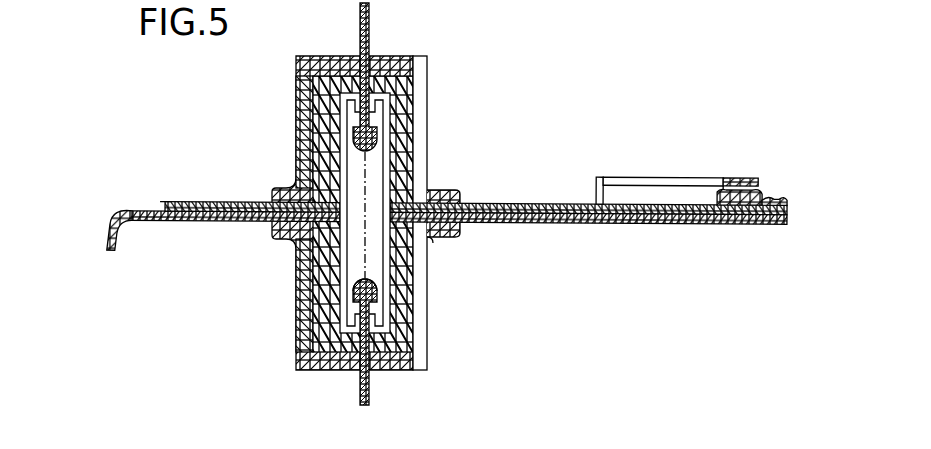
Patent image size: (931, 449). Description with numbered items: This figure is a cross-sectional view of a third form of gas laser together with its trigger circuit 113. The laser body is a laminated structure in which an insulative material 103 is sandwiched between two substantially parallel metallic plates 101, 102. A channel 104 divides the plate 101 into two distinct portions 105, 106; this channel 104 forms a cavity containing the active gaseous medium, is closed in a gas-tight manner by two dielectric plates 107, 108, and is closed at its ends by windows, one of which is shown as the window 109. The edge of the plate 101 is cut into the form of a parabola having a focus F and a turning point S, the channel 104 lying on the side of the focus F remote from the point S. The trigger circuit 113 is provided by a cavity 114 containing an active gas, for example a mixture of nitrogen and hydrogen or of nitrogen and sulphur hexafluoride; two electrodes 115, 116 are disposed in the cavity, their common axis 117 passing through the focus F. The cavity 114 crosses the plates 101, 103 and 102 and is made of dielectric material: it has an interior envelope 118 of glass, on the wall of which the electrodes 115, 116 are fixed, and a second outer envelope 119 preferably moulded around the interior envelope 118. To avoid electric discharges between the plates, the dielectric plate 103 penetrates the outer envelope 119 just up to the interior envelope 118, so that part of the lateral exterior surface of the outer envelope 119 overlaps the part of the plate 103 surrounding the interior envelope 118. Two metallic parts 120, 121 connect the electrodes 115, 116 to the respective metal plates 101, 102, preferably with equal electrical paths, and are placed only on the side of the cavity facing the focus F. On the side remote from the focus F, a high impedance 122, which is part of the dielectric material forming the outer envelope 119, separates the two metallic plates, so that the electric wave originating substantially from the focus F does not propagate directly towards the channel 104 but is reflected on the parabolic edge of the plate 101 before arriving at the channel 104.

The metallic plate 101 is at (197, 203).
The metallic plate 102 is at (188, 223).
The insulative material 103 is at (133, 210).
The channel 104 is at (745, 190).
The portion of plate 105 is at (492, 204).
The portion of plate 106 is at (775, 197).
The dielectric plate 107 is at (642, 180).
The dielectric plate 108 is at (723, 186).
The window 109 is at (599, 176).
The trigger circuit 113 is at (296, 96).
The cavity 114 is at (414, 93).
The electrode 115 is at (367, 34).
The electrode 116 is at (367, 390).
The common axis 117 is at (366, 264).
The interior envelope 118 is at (386, 118).
The outer envelope 119 is at (405, 150).
The metallic part 120 is at (305, 152).
The metallic part 121 is at (299, 296).
The high impedance 122 is at (458, 238).
The turning point S is at (160, 202).
The focus F is at (365, 212).